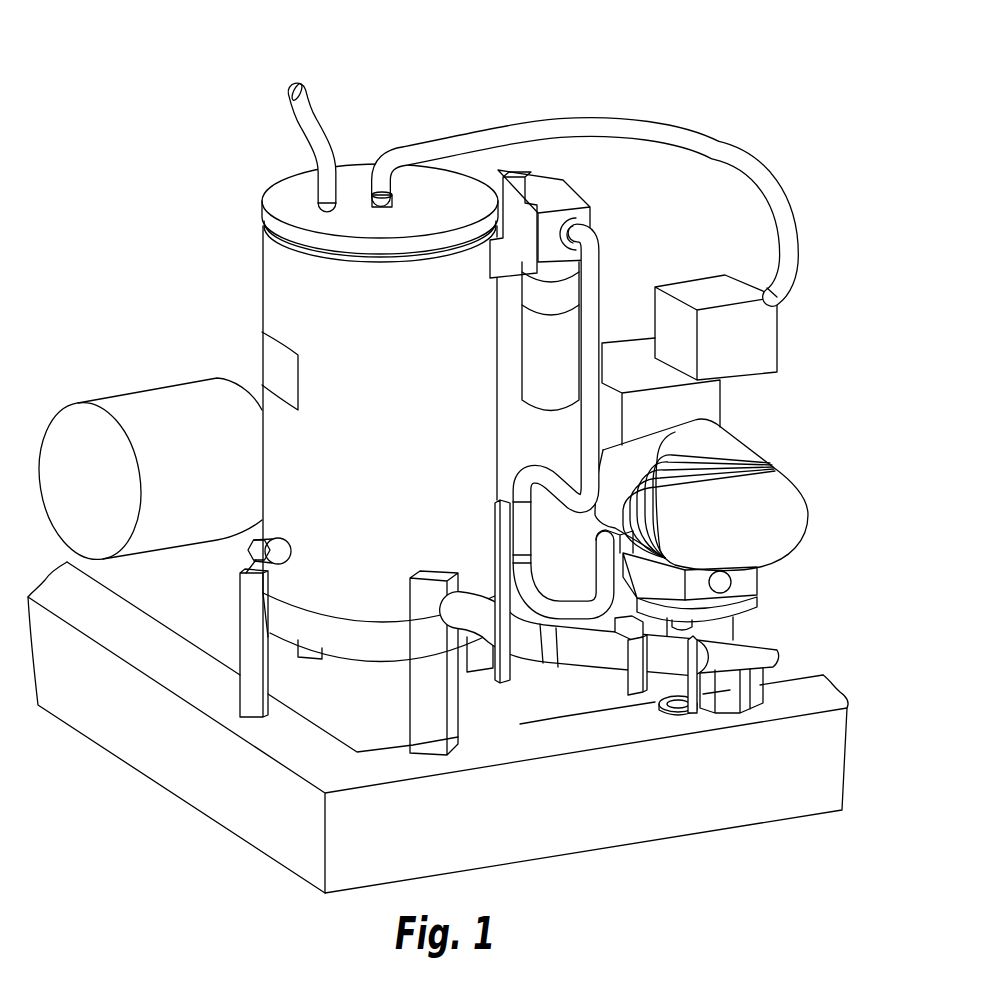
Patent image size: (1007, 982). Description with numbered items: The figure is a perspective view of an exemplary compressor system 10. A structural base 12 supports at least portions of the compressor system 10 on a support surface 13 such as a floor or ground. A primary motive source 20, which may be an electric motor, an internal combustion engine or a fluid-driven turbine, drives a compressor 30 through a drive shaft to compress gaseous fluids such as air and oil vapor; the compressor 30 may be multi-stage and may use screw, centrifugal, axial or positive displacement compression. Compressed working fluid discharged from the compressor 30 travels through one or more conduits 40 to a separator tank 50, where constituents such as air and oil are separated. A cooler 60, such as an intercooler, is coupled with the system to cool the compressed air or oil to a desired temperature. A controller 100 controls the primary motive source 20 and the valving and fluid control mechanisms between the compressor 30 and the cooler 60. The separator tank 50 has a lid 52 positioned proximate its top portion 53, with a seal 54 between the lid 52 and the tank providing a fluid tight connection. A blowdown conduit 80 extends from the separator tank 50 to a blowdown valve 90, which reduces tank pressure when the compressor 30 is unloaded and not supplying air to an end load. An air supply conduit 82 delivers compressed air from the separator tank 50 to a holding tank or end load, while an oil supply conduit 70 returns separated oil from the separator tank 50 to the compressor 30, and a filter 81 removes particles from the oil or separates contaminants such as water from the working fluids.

The compressor system 10 is at (606, 60).
The structural base 12 is at (545, 822).
The support surface 13 is at (719, 906).
The primary motive source 20 is at (728, 400).
The compressor 30 is at (745, 527).
The conduit 40 is at (588, 662).
The separator tank 50 is at (392, 451).
The lid 52 is at (293, 197).
The top portion 53 is at (232, 168).
The seal 54 is at (287, 245).
The cooler 60 is at (197, 482).
The oil supply conduit 70 is at (602, 279).
The blowdown conduit 80 is at (658, 128).
The filter 81 is at (567, 369).
The air supply conduit 82 is at (325, 102).
The blowdown valve 90 is at (780, 300).
The controller 100 is at (757, 356).